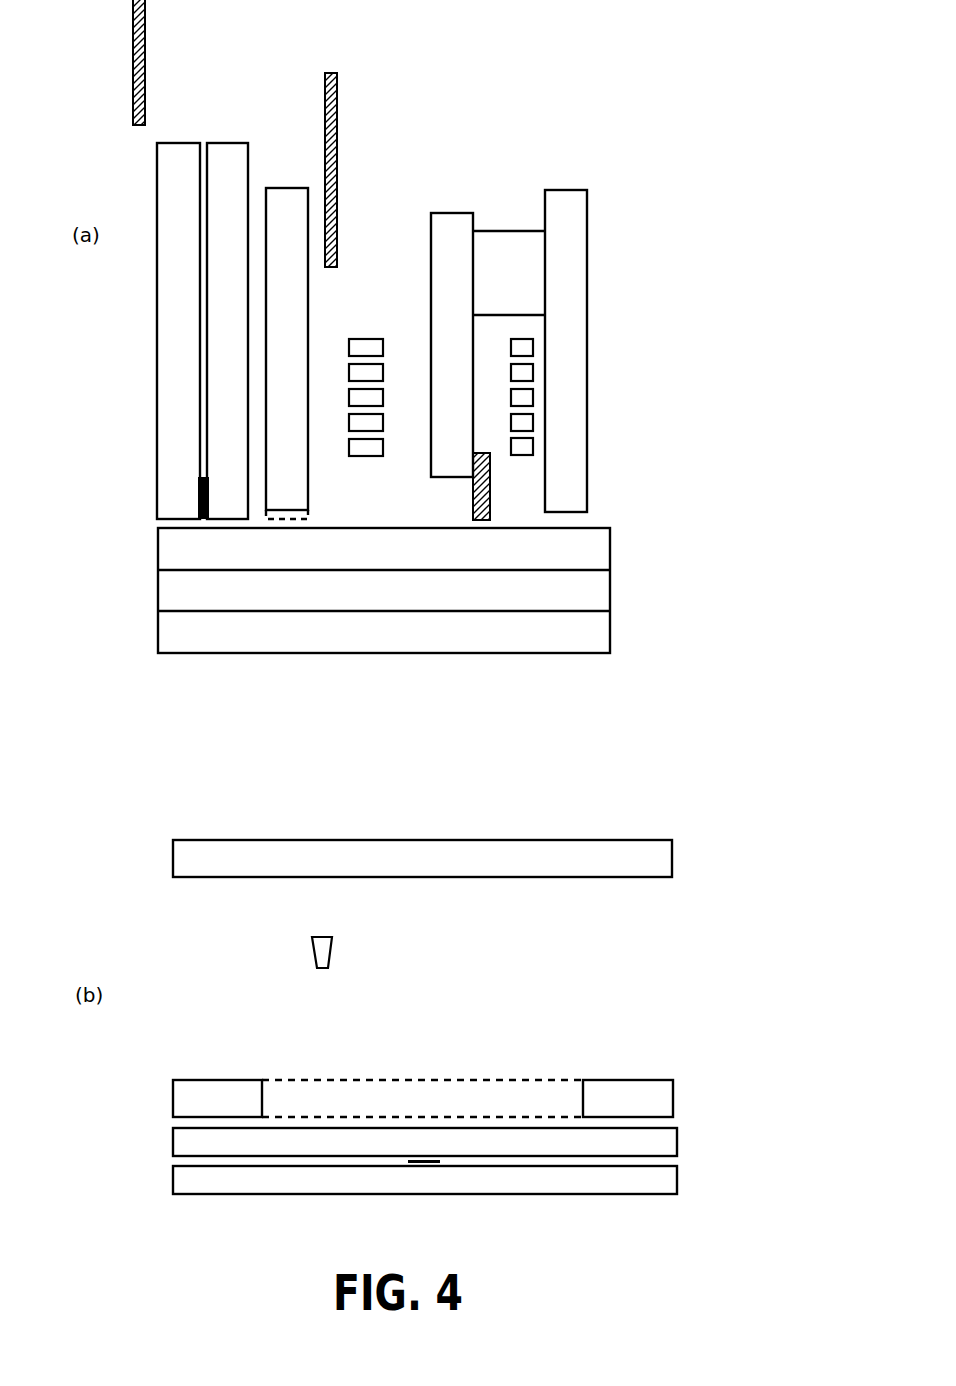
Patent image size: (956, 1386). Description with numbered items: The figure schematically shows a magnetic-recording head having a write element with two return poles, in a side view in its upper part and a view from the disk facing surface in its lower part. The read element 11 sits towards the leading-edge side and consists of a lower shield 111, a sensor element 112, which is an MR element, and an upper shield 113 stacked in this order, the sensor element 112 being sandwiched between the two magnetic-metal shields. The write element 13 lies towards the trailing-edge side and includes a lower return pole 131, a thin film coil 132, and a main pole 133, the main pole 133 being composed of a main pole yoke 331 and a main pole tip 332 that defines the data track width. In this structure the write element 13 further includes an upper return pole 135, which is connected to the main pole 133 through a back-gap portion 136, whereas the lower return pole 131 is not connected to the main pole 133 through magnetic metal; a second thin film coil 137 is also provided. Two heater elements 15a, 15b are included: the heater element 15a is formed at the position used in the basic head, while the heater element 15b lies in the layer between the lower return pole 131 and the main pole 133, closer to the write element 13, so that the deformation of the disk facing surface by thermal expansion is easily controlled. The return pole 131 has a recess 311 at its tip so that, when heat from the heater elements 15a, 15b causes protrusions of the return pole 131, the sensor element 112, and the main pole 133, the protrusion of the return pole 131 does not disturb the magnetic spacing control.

The read element 11 is at (208, 117).
The write element 13 is at (460, 98).
The heater element 15a is at (145, 18).
The heater element 15b is at (337, 100).
The lower shield 111 is at (677, 1187).
The sensor element 112 is at (433, 1160).
The upper shield 113 is at (677, 1147).
The lower return pole 131 is at (283, 188).
The thin film coil 132 is at (521, 455).
The main pole 133 is at (407, 257).
The upper return pole 135 is at (587, 267).
The back-gap portion 136 is at (503, 231).
The second thin film coil 137 is at (350, 440).
The recess 311 is at (583, 1097).
The main pole yoke 331 is at (430, 320).
The main pole tip 332 is at (472, 493).